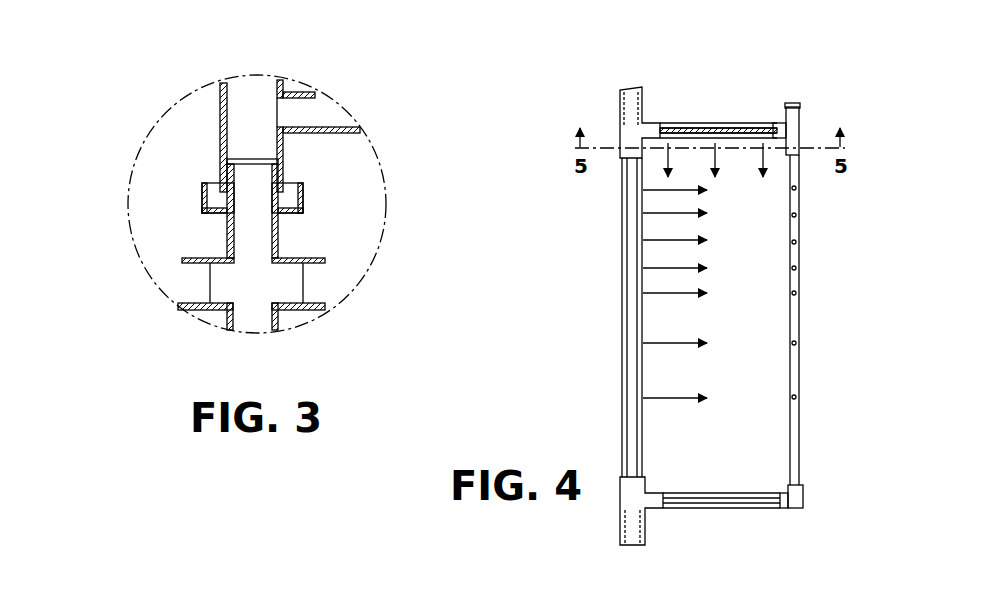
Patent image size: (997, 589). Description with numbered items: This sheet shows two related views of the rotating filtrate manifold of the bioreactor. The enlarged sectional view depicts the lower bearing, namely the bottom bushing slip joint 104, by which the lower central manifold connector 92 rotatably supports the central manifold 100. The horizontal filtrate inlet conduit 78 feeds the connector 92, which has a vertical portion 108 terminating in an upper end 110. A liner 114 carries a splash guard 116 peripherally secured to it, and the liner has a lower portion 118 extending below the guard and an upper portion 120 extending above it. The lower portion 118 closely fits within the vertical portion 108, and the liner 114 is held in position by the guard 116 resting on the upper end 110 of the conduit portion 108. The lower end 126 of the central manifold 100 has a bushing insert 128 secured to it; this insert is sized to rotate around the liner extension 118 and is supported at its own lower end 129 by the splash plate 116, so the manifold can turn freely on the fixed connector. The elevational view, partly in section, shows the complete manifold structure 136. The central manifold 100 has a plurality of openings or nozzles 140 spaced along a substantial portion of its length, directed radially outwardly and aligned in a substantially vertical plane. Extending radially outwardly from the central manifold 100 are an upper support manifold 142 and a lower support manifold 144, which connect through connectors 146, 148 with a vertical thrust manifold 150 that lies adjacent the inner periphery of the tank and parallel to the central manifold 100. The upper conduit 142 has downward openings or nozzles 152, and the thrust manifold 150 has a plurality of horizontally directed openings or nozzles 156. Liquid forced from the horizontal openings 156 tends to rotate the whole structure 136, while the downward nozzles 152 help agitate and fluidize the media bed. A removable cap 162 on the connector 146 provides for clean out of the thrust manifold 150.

In FIG. 3, the horizontal filtrate inlet conduit 78 is at (186, 286).
In FIG. 3, the lower central manifold connector 92 is at (278, 288).
In FIG. 3, the central manifold 100 is at (220, 103).
In FIG. 4, the central manifold 100 is at (627, 398).
In FIG. 3, the bushing slip joint 104 is at (256, 60).
In FIG. 3, the vertical portion 108 is at (226, 244).
In FIG. 4, the vertical portion 108 is at (620, 113).
In FIG. 3, the upper end 110 is at (280, 222).
In FIG. 3, the liner 114 is at (285, 252).
In FIG. 3, the splash guard 116 is at (280, 195).
In FIG. 3, the lower portion of liner 118 is at (247, 190).
In FIG. 3, the upper portion of liner 120 is at (245, 232).
In FIG. 3, the lower end of central manifold 126 is at (288, 183).
In FIG. 3, the bushing insert 128 is at (247, 157).
In FIG. 3, the lower end of bushing insert 129 is at (300, 205).
In FIG. 4, the manifold structure 136 is at (625, 68).
In FIG. 4, the openings or nozzles 140 is at (643, 395).
In FIG. 4, the upper support manifold 142 is at (712, 124).
In FIG. 3, the lower support manifold 144 is at (322, 112).
In FIG. 4, the lower support manifold 144 is at (737, 494).
In FIG. 4, the connector 146 is at (800, 124).
In FIG. 4, the connector 148 is at (802, 505).
In FIG. 4, the thrust manifold 150 is at (797, 325).
In FIG. 4, the downward openings or nozzles 152 is at (764, 142).
In FIG. 4, the horizontally directed openings or nozzles 156 is at (797, 293).
In FIG. 4, the removable cap 162 is at (800, 107).